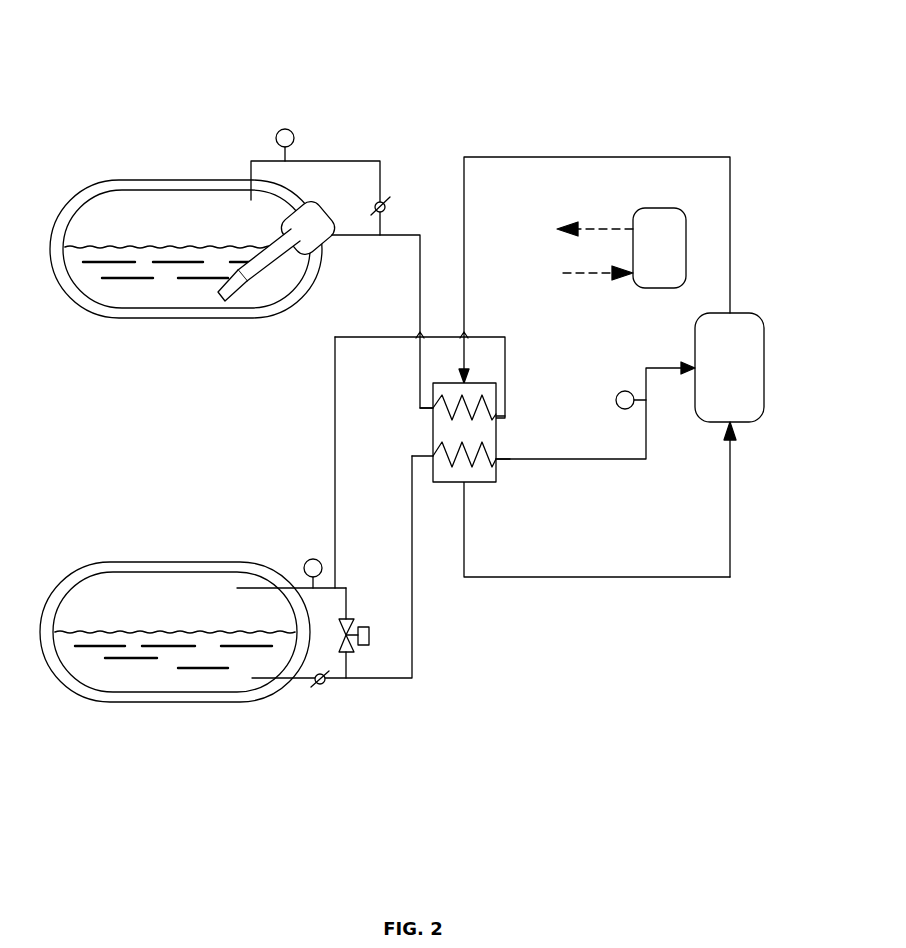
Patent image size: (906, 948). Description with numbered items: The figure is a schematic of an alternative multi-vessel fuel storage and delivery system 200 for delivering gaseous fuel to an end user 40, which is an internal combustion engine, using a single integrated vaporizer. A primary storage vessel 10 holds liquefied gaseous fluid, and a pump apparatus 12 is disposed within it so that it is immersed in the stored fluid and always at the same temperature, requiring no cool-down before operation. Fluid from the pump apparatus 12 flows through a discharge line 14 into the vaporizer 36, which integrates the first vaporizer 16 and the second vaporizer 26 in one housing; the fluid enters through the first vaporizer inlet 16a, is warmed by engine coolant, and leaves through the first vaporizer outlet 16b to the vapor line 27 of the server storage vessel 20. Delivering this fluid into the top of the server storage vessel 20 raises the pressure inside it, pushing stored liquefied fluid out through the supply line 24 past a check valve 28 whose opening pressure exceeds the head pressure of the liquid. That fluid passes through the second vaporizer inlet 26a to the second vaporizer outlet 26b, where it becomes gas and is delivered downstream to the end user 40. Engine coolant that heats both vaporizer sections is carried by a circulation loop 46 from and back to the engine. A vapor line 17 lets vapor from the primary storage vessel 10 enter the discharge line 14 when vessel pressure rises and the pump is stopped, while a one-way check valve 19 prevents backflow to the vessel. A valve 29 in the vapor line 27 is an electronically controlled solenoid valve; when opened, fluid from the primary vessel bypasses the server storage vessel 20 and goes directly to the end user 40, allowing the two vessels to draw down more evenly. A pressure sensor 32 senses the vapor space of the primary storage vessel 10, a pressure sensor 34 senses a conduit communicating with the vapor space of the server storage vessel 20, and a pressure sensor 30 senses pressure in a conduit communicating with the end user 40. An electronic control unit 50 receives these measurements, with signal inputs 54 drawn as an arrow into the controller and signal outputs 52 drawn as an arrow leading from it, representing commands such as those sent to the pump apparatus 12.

The multi-vessel fuel storage and delivery system 200 is at (74, 78).
The primary storage vessel 10 is at (106, 180).
The pump apparatus 12 is at (282, 262).
The discharge line 14 is at (409, 244).
The first vaporizer 16 is at (486, 402).
The first vaporizer inlet 16a is at (432, 408).
The first vaporizer outlet 16b is at (497, 426).
The vapor line 17 is at (339, 160).
The one-way check valve 19 is at (386, 200).
The server storage vessel 20 is at (95, 562).
The supply line 24 is at (583, 462).
The second vaporizer 26 is at (471, 472).
The second vaporizer inlet 26a is at (432, 455).
The second vaporizer outlet 26b is at (503, 461).
The vapor line 27 is at (351, 602).
The check valve 28 is at (322, 690).
The valve 29 is at (371, 634).
The pressure sensor 30 is at (616, 400).
The pressure sensor 32 is at (284, 128).
The pressure sensor 34 is at (311, 558).
The vaporizer 36 is at (437, 485).
The end user 40 is at (729, 367).
The circulation loop 46 is at (731, 250).
The electronic control unit 50 is at (659, 248).
The signal outputs 52 is at (594, 224).
The signal inputs 54 is at (618, 276).